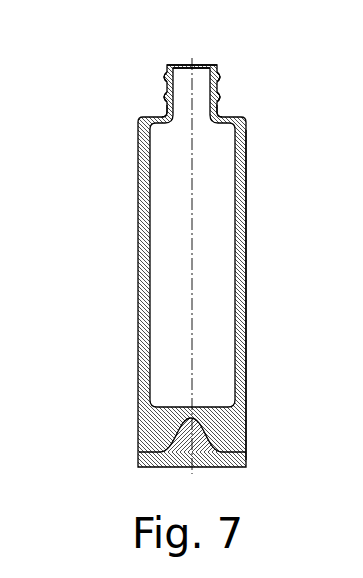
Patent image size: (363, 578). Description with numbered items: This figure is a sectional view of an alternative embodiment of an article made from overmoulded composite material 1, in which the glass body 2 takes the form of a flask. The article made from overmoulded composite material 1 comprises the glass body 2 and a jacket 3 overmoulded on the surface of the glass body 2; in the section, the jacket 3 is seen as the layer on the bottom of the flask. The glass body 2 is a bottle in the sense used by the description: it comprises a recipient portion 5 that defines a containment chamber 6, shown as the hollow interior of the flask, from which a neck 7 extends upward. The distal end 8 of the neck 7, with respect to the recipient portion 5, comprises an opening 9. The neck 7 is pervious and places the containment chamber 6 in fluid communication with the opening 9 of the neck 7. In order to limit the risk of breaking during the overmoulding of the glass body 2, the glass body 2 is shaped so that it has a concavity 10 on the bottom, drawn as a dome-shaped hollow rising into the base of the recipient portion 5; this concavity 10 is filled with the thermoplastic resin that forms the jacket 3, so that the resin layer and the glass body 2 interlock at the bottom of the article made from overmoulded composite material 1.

The article made from overmoulded composite material 1 is at (180, 278).
The glass body 2 is at (138, 282).
The jacket 3 is at (138, 460).
The recipient portion 5 is at (242, 346).
The containment chamber 6 is at (221, 299).
The neck 7 is at (217, 98).
The distal end 8 is at (163, 65).
The opening 9 is at (198, 63).
The concavity 10 is at (183, 423).